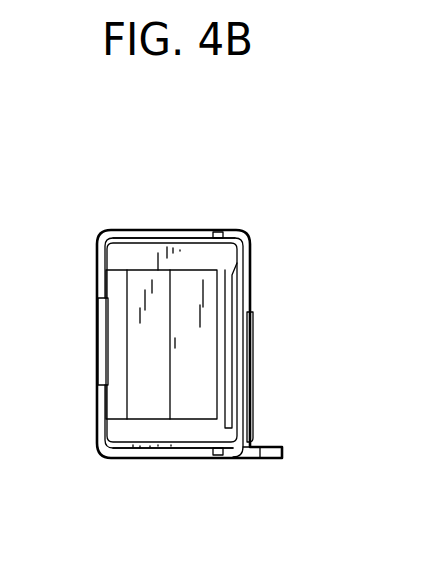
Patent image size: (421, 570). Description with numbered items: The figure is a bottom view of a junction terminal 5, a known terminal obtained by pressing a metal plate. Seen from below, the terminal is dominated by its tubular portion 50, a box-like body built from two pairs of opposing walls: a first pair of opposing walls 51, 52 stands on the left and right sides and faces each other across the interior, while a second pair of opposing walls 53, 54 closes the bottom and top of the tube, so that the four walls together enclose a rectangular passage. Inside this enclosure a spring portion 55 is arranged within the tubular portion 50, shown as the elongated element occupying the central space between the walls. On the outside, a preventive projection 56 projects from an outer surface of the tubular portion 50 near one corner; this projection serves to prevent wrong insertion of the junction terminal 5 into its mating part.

The junction terminal 5 is at (216, 201).
The tubular portion 50 is at (254, 245).
The opposing wall 51 is at (97, 338).
The opposing wall 52 is at (254, 368).
The opposing wall 53 is at (178, 458).
The opposing wall 54 is at (145, 230).
The spring portion 55 is at (150, 380).
The preventive projection 56 is at (270, 457).